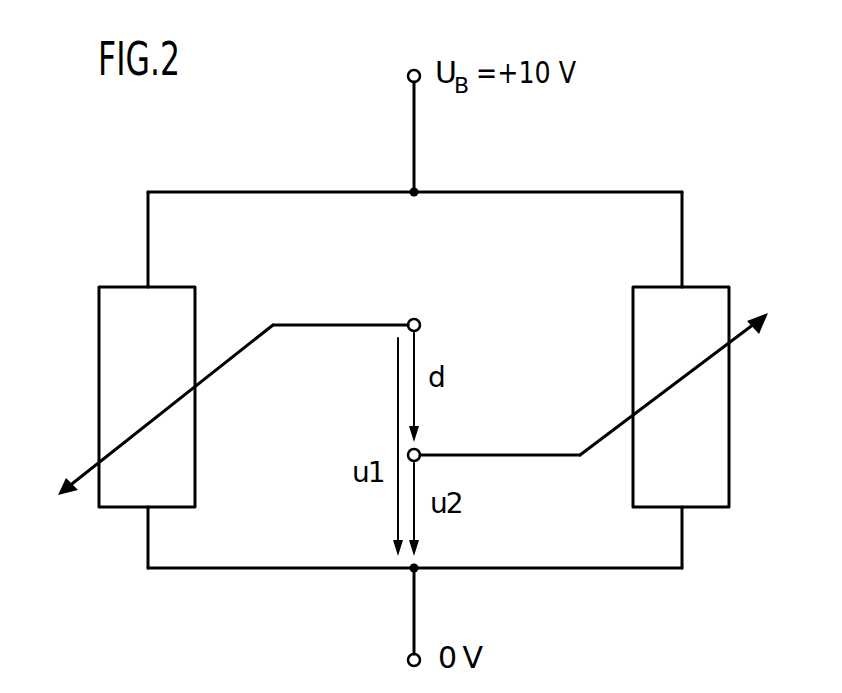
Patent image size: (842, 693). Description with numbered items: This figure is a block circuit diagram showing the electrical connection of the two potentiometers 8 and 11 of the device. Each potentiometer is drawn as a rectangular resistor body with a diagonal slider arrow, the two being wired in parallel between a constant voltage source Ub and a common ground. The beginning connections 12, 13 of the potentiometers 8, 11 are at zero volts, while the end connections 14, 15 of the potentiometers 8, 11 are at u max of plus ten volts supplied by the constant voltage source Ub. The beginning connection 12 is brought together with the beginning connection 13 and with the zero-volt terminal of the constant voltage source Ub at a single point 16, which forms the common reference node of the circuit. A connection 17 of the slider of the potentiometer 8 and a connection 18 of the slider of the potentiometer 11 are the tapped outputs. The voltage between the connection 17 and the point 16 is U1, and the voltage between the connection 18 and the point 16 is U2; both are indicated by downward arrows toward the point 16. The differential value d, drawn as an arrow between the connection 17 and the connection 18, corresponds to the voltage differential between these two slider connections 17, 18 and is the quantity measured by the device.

The potentiometer 8 is at (130, 337).
The potentiometer 11 is at (717, 373).
The beginning connection 12 is at (148, 539).
The beginning connection 13 is at (682, 543).
The end connection 14 is at (148, 230).
The end connection 15 is at (682, 240).
The point 16 is at (412, 570).
The connection of the slider 17 is at (419, 320).
The connection of the slider 18 is at (420, 450).